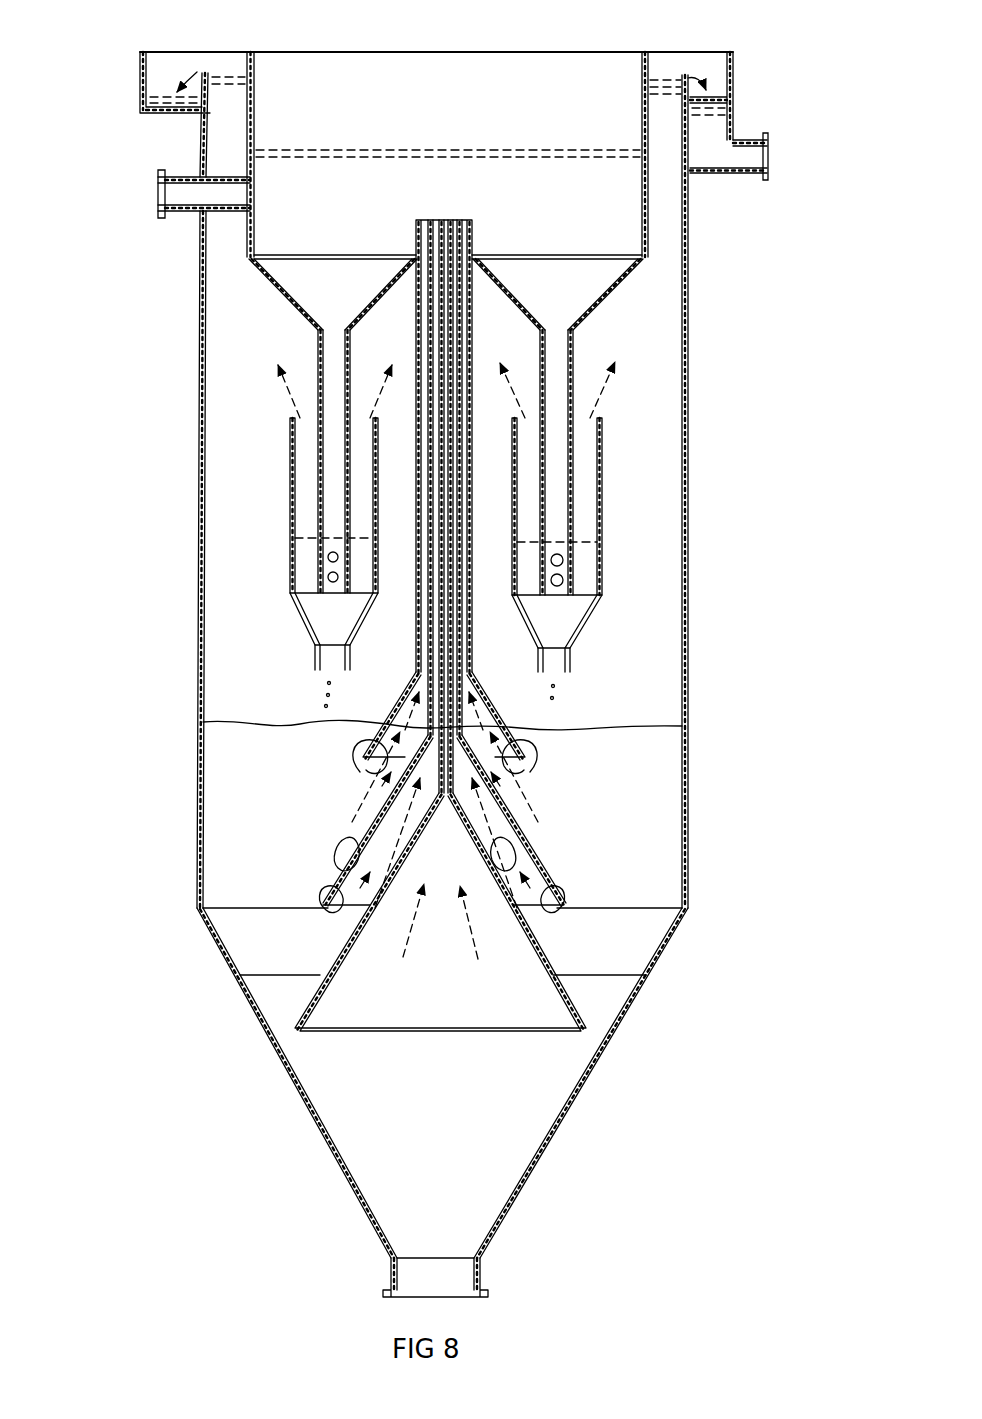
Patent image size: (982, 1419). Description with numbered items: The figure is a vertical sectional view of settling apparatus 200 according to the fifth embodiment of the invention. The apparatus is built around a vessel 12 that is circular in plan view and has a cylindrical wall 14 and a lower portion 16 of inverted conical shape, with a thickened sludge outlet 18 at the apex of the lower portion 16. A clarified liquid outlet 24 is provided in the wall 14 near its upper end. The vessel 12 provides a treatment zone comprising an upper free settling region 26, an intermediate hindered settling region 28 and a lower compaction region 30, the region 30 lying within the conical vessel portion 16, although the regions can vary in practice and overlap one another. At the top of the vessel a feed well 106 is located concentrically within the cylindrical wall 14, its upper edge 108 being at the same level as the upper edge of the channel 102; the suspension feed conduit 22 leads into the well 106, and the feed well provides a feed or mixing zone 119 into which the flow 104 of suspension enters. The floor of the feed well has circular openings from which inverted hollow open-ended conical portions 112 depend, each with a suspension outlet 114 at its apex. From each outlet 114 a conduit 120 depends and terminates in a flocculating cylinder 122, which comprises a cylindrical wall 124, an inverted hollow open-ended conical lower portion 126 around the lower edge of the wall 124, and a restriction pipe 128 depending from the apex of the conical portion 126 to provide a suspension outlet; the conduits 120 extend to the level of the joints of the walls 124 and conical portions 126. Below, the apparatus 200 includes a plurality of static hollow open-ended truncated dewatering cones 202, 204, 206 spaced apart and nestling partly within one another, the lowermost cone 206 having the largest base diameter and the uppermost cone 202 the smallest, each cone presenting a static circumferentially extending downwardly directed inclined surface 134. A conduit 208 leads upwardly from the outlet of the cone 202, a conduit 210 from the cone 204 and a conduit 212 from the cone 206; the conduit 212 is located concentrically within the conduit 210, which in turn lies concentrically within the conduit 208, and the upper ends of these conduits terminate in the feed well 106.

The vessel 12 is at (712, 457).
The cylindrical wall 14 is at (689, 643).
The lower portion 16 is at (592, 1078).
The thickened sludge outlet 18 is at (481, 1278).
The suspension feed conduit 22 is at (190, 211).
The clarified liquid outlet 24 is at (758, 178).
The upper free settling region 26 is at (250, 428).
The intermediate hindered settling region 28 is at (268, 815).
The lower compaction region 30 is at (368, 1092).
The channel 102 is at (142, 75).
The liquid flow path 104 is at (205, 75).
The feed well 106 is at (648, 229).
The upper edge 108 is at (642, 72).
The conical portion 112 is at (272, 285).
The suspension outlet 114 is at (333, 303).
The feed or mixing zone 119 is at (343, 105).
The conduit 120 is at (323, 463).
The flocculating cylinder 122 is at (273, 545).
The cylindrical wall 124 is at (292, 505).
The conical shaped lower portion 126 is at (300, 613).
The restriction pipe 128 is at (318, 657).
The inclined surface 134 is at (505, 740).
The settling apparatus 200 is at (812, 345).
The dewatering cone 202 is at (513, 732).
The dewatering cone 204 is at (507, 817).
The dewatering cone 206 is at (545, 953).
The conduit 208 is at (464, 672).
The conduit 210 is at (462, 698).
The conduit 212 is at (450, 763).